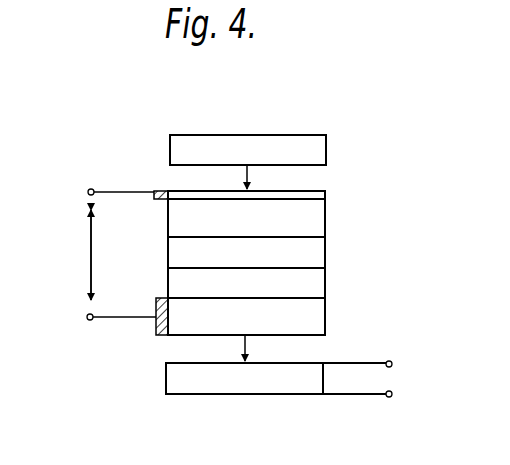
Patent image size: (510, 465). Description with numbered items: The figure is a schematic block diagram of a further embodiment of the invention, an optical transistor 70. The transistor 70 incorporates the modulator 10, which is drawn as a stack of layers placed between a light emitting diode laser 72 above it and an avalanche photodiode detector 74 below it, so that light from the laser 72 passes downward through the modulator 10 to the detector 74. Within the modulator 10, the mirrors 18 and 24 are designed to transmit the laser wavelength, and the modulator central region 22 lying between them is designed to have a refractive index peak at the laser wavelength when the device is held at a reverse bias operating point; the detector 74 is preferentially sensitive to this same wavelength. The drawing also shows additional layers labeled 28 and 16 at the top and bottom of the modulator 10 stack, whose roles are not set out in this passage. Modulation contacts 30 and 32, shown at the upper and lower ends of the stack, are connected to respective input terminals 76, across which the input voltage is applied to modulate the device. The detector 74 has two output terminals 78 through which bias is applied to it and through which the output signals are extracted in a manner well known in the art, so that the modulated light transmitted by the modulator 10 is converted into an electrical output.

The modulator 10 is at (326, 191).
The substrate layer 16 is at (320, 318).
The mirror 18 is at (320, 283).
The modulator central region 22 is at (320, 252).
The mirror 24 is at (326, 218).
The n++ layer 28 is at (326, 199).
The modulation contact 30 is at (156, 190).
The modulation contact 32 is at (156, 325).
The optical transistor 70 is at (130, 376).
The light emitting diode laser 72 is at (326, 152).
The avalanche photodiode detector 74 is at (238, 394).
The input terminals 76 is at (88, 194).
The output terminals 78 is at (392, 366).